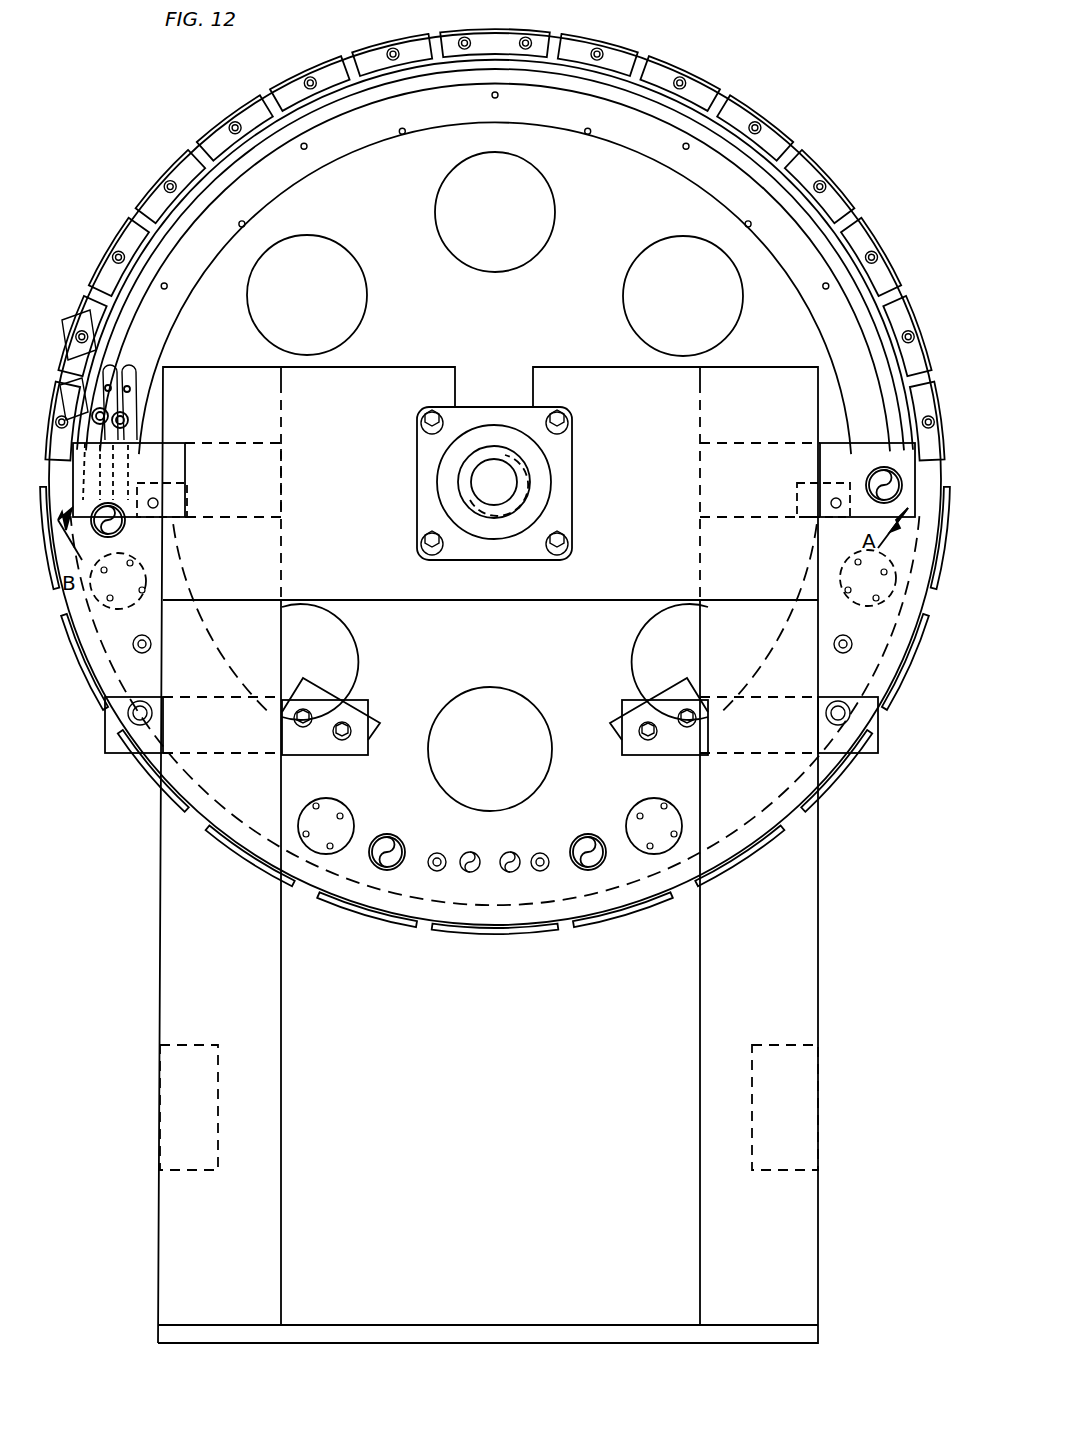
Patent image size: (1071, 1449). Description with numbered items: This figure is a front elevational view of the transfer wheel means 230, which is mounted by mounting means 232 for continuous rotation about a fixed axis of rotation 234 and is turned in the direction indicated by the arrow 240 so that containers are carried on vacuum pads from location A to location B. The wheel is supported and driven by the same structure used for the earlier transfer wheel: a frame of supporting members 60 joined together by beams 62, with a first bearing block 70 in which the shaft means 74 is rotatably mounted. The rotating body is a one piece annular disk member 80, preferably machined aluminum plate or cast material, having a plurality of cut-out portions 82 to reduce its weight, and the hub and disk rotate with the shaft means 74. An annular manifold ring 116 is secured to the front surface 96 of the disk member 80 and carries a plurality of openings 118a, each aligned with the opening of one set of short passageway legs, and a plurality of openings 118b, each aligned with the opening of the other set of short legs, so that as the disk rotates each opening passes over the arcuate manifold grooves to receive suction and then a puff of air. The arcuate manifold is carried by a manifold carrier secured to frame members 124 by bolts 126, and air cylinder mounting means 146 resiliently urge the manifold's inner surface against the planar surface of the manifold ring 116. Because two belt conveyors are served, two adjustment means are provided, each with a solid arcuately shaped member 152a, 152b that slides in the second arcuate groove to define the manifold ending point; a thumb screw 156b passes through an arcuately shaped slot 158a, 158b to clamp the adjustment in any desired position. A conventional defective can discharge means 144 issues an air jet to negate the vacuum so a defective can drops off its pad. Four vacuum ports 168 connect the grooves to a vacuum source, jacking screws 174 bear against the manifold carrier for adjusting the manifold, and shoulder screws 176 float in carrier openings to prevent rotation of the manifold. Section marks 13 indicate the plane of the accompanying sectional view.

The section line 13- 13 is at (70, 482).
The supporting members 60 is at (165, 942).
The beams 62 is at (162, 1107).
The first bearing block 70 is at (430, 516).
The shaft means 74 is at (505, 480).
The annular disk member 80 is at (578, 165).
The cut-out portions 82 is at (354, 318).
The front surface 96 is at (422, 266).
The annular manifold ring 116 is at (300, 175).
The openings 118a is at (307, 148).
The openings 118b is at (403, 134).
The frame members 124 is at (186, 496).
The bolts 126 is at (158, 501).
The defective can discharge means 144 is at (508, 852).
The air cylinder mounting means 146 is at (125, 585).
The arcuately shaped member 152a is at (112, 366).
The arcuately shaped member 152b is at (140, 372).
The thumb screw 156b is at (90, 402).
The arcuately shaped slot 158a is at (82, 338).
The arcuately shaped slot 158b is at (108, 414).
The vacuum ports 168 is at (125, 525).
The jacking screws 174 is at (88, 745).
The shoulder screws 176 is at (140, 648).
The transfer wheel means 230 is at (435, 962).
The mounting means 232 is at (578, 448).
The fixed axis of rotation 234 is at (522, 505).
The arrow 240 is at (612, 172).